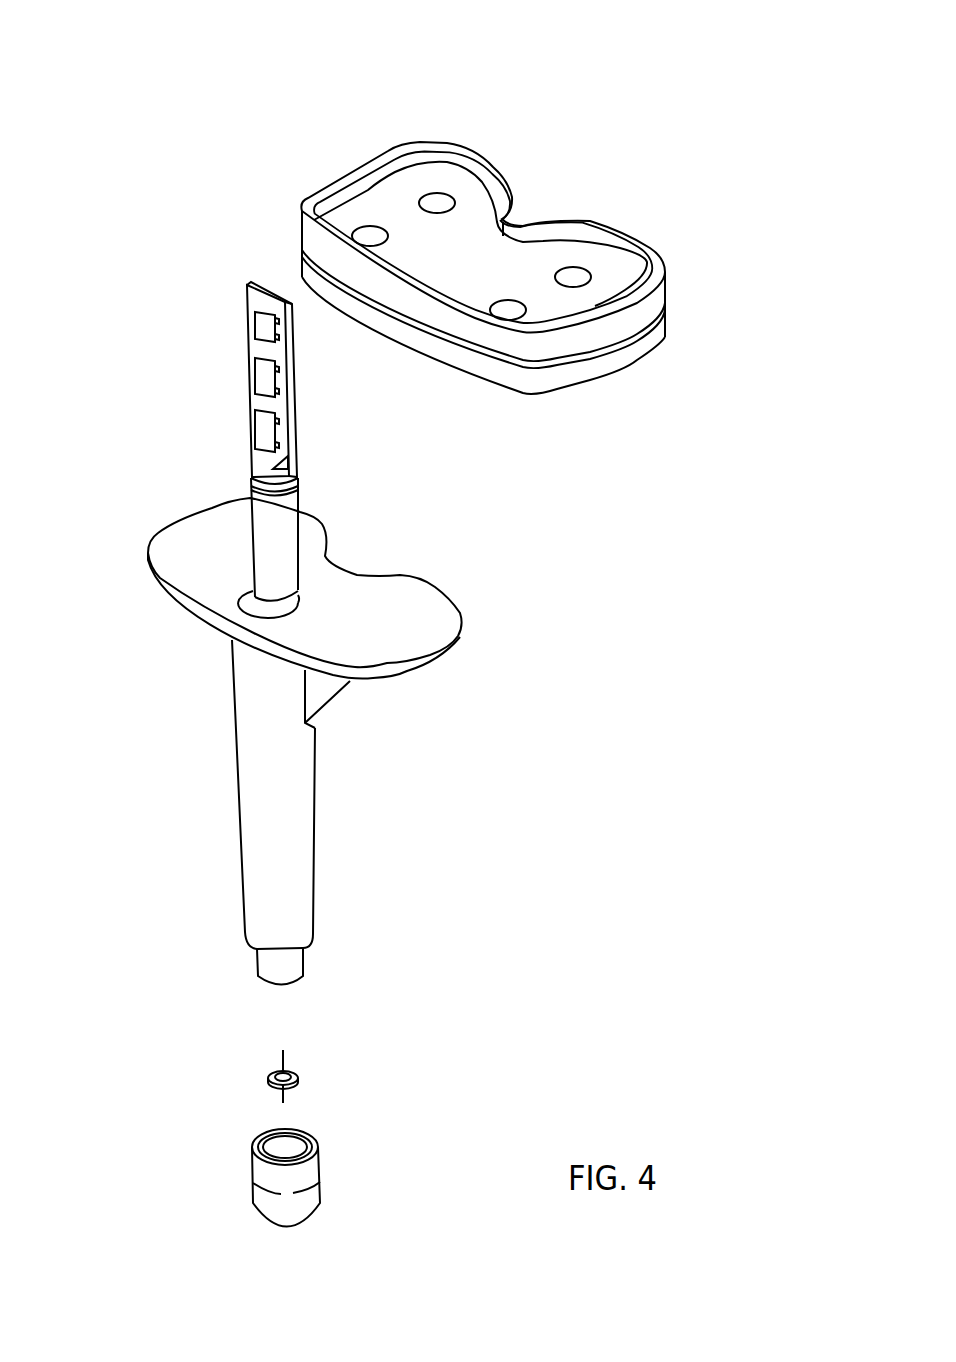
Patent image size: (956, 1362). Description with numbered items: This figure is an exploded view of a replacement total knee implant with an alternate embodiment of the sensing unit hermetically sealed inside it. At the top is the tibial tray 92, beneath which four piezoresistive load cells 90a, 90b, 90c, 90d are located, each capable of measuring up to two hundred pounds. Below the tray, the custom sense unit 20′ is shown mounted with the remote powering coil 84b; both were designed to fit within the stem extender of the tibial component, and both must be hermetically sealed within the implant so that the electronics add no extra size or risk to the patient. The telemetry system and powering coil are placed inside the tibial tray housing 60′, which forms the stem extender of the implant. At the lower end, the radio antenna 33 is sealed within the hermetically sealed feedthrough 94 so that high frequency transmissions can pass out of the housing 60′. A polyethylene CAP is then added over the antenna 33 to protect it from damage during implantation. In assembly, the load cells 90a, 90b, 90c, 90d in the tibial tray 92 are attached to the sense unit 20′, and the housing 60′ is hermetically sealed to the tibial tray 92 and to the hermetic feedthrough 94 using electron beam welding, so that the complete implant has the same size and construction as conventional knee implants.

The tibial tray 92 is at (577, 393).
The piezoresistive load cell 90a is at (370, 236).
The piezoresistive load cell 90b is at (437, 203).
The piezoresistive load cell 90c is at (508, 310).
The piezoresistive load cell 90d is at (573, 277).
The sense unit 20′ is at (240, 358).
The remote powering coil 84b is at (240, 497).
The tibial tray housing 60′ is at (318, 830).
The hermetically sealed feedthrough 94 is at (258, 1070).
The radio antenna 33 is at (297, 1088).
The polyethylene cap CAP is at (247, 1218).